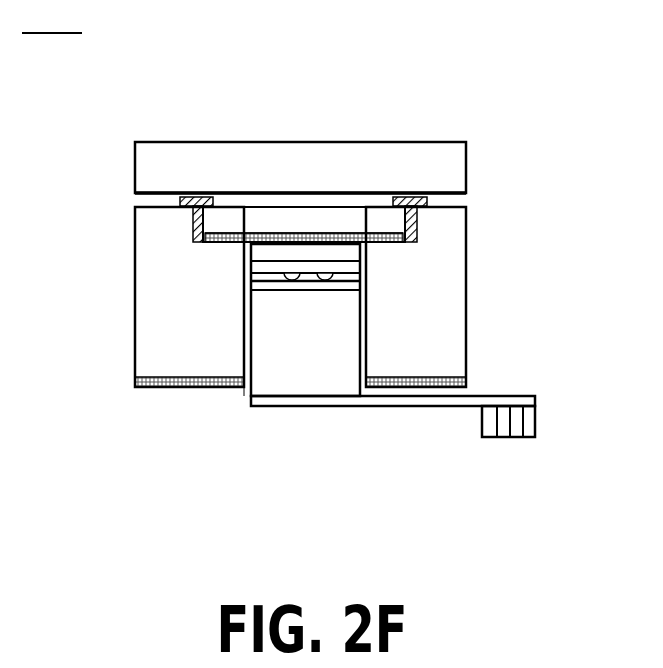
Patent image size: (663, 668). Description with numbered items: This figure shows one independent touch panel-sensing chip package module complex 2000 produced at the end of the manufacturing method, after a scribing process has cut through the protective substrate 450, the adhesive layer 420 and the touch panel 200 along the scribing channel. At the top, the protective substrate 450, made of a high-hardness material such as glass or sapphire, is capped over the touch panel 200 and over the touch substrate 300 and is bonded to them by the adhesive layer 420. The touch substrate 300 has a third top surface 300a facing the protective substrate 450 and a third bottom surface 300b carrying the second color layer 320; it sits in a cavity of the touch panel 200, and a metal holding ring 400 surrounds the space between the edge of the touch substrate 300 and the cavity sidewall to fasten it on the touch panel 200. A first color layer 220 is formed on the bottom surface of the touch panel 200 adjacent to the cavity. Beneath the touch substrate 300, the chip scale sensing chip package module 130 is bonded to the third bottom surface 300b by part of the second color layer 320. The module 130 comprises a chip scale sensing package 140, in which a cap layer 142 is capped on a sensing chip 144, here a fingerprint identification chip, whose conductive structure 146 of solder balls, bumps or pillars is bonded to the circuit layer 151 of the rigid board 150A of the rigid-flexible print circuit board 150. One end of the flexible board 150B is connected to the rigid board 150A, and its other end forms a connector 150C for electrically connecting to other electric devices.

The touch panel-sensing chip package module complex 2000 is at (52, 17).
The protective substrate 450 is at (300, 167).
The adhesive layer 420 is at (166, 200).
The metal holding ring 400 is at (418, 197).
The touch substrate 300 is at (355, 220).
The third top surface 300a is at (250, 196).
The third bottom surface 300b is at (285, 222).
The second color layer 320 is at (333, 240).
The touch panel 200 is at (300, 297).
The first color layer 220 is at (178, 387).
The chip scale sensing chip package module 130 is at (232, 408).
The chip scale sensing package 140 is at (438, 288).
The cap layer 142 is at (335, 247).
The sensing chip 144 is at (335, 265).
The conductive structure 146 is at (335, 276).
The rigid-flexible print circuit board 150 is at (392, 388).
The rigid board 150A is at (320, 330).
The circuit layer 151 is at (277, 285).
The flexible board 150B is at (410, 406).
The connector 150C is at (482, 420).